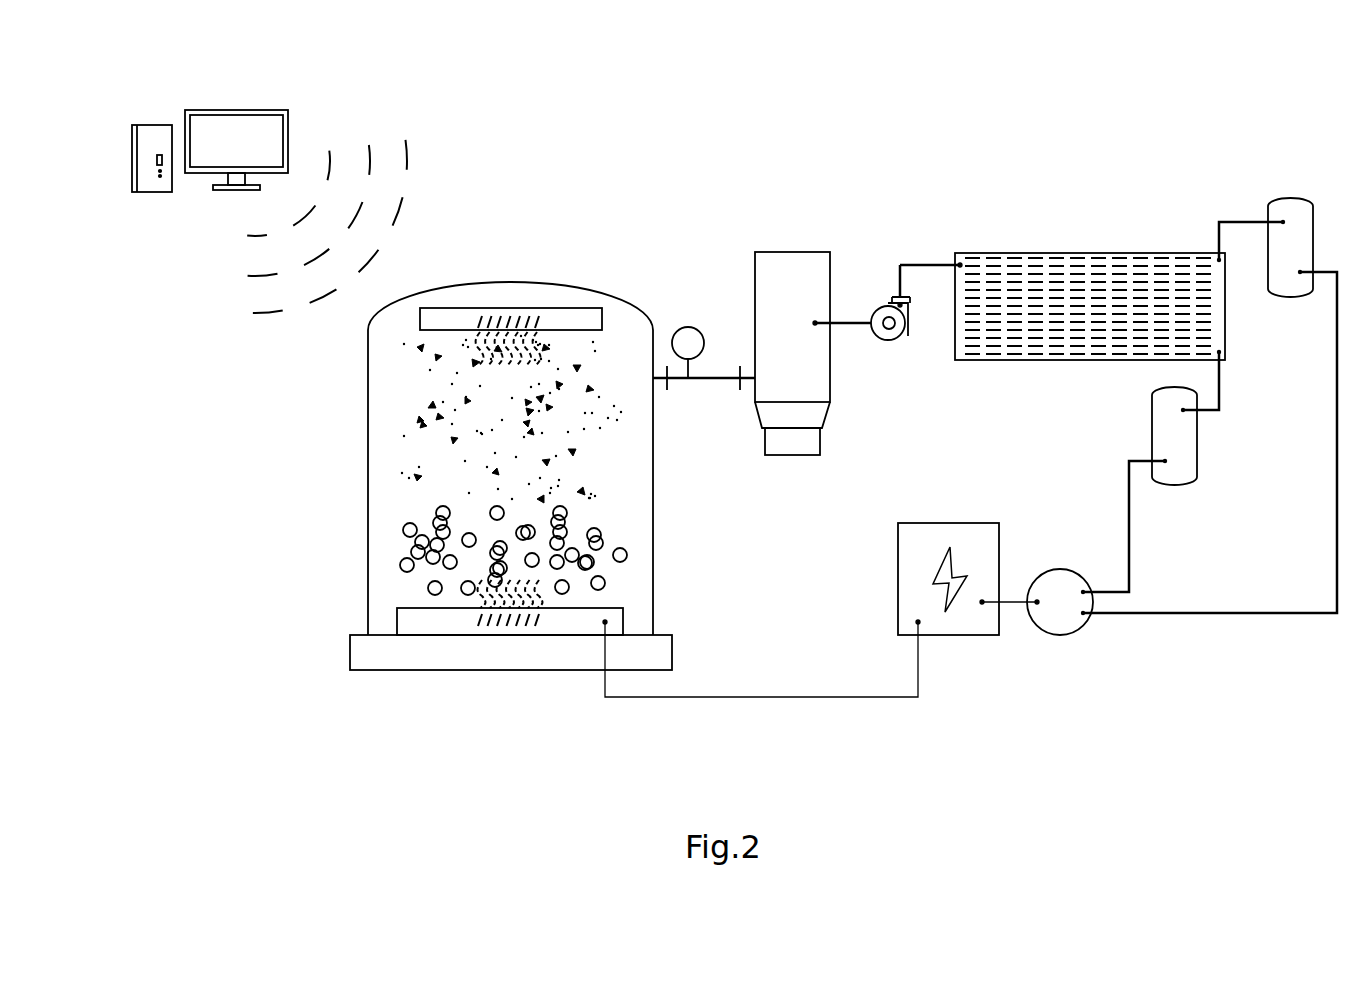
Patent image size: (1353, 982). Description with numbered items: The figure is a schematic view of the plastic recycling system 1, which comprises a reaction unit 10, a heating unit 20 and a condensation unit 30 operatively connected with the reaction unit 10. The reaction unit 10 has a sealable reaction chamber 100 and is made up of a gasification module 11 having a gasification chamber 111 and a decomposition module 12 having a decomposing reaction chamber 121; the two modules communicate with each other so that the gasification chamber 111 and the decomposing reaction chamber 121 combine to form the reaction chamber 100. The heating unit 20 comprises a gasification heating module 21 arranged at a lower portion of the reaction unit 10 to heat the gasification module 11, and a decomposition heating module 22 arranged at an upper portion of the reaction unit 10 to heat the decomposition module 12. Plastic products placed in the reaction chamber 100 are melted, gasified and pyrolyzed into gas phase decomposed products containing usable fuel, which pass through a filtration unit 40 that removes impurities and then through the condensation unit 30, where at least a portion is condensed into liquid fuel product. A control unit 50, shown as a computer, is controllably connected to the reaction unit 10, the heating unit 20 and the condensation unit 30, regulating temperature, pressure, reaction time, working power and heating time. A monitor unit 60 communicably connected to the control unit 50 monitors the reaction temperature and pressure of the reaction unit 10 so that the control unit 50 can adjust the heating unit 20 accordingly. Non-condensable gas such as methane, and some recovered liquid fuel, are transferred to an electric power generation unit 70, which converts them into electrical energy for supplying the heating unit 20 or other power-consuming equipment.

The plastic recycling system 1 is at (958, 197).
The reaction unit 10 is at (578, 272).
The gasification module 11 is at (425, 505).
The gasification chamber 111 is at (440, 528).
The decomposition module 12 is at (425, 392).
The decomposing reaction chamber 121 is at (435, 414).
The reaction chamber 100 is at (425, 447).
The heating unit 20 is at (465, 625).
The gasification heating module 21 is at (538, 620).
The decomposition heating module 22 is at (563, 318).
The condensation unit 30 is at (1090, 268).
The filtration unit 40 is at (800, 272).
The control unit 50 is at (228, 130).
The monitor unit 60 is at (683, 332).
The electric power generation unit 70 is at (1068, 632).